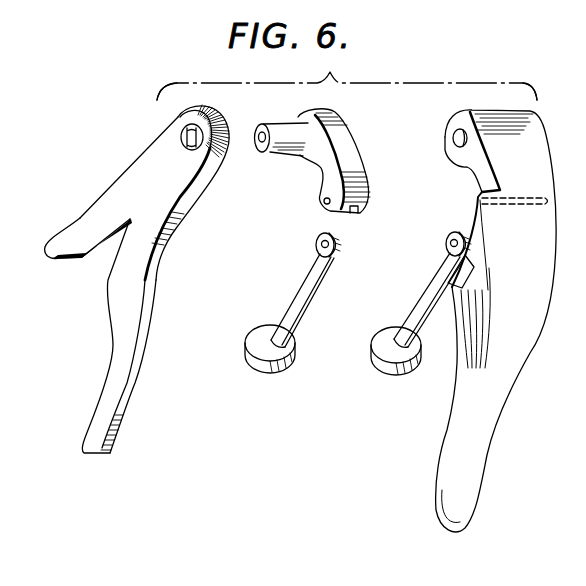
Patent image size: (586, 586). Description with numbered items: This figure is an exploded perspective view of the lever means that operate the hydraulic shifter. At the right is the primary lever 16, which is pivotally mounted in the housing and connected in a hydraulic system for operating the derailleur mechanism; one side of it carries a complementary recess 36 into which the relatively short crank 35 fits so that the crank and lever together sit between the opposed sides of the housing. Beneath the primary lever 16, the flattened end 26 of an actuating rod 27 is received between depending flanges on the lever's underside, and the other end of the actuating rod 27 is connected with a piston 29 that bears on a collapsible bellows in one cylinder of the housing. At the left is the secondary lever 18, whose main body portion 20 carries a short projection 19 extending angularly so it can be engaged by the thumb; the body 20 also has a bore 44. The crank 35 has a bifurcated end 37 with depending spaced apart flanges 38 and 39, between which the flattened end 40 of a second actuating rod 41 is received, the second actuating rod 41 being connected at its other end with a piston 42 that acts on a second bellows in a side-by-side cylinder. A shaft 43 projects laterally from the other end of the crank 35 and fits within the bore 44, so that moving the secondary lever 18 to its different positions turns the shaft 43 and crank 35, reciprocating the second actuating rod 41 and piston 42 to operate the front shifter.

The primary lever 16 is at (507, 357).
The secondary lever 18 is at (120, 343).
The short projection 19 is at (73, 225).
The main body portion 20 is at (158, 162).
The flattened end 26 is at (452, 231).
The actuating rod 27 is at (422, 294).
The piston 29 is at (380, 358).
The crank 35 is at (353, 141).
The complementary recess 36 is at (476, 152).
The bifurcated end 37 is at (355, 177).
The flange 38 is at (318, 207).
The flange 39 is at (352, 214).
The flattened end 40 is at (320, 244).
The second actuating rod 41 is at (292, 300).
The piston 42 is at (246, 348).
The shaft 43 is at (290, 120).
The bore 44 is at (182, 128).